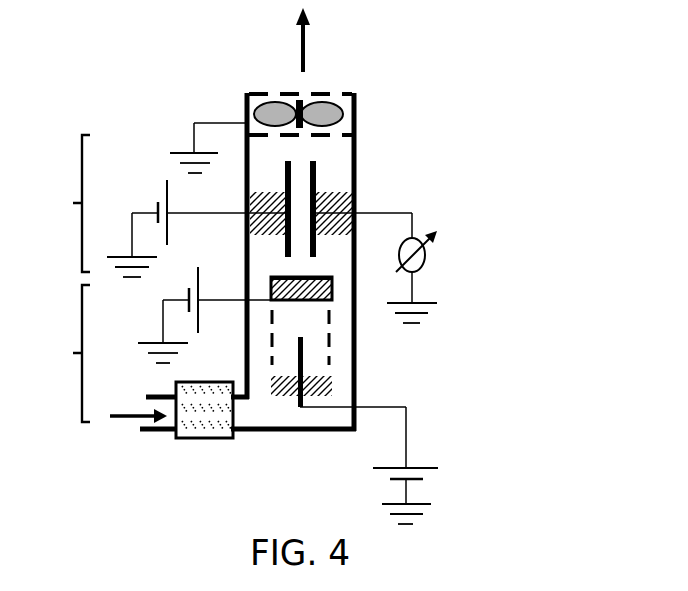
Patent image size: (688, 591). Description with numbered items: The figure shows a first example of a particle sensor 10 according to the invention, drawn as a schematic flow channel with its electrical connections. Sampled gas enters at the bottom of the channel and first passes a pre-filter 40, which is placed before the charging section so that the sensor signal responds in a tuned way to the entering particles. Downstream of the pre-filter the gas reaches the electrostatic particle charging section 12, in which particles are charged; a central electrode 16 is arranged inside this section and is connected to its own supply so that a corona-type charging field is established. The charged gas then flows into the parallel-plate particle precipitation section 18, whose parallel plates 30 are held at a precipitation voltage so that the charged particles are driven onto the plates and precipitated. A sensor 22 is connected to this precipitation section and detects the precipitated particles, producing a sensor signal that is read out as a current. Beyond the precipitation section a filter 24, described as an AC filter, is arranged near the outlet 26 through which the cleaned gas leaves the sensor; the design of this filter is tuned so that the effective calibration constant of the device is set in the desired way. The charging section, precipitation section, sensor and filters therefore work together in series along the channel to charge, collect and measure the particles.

The gas inlet / sample gas flow 10 is at (143, 430).
The corona charging section 12 is at (186, 344).
The collector electrode 16 is at (330, 337).
The precipitator section 18 is at (196, 206).
The current sensor (ammeter) 22 is at (430, 258).
The filter 24 is at (341, 114).
The gas outlet 26 is at (345, 72).
The precipitation plates 30 is at (318, 165).
The inlet screen / heater block 40 is at (213, 438).